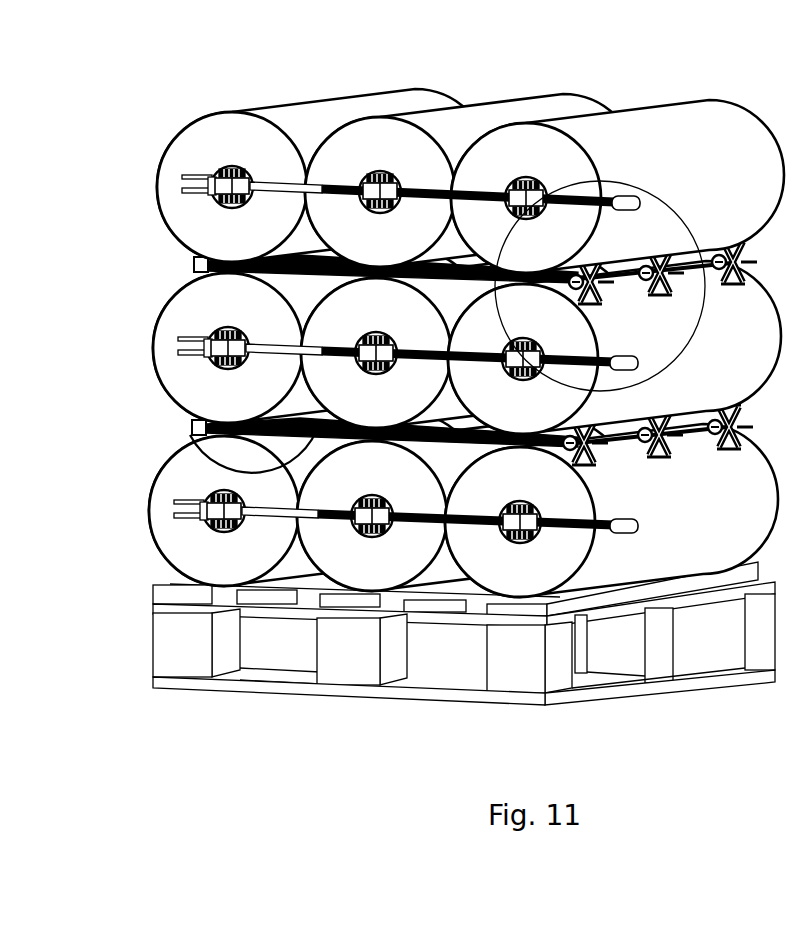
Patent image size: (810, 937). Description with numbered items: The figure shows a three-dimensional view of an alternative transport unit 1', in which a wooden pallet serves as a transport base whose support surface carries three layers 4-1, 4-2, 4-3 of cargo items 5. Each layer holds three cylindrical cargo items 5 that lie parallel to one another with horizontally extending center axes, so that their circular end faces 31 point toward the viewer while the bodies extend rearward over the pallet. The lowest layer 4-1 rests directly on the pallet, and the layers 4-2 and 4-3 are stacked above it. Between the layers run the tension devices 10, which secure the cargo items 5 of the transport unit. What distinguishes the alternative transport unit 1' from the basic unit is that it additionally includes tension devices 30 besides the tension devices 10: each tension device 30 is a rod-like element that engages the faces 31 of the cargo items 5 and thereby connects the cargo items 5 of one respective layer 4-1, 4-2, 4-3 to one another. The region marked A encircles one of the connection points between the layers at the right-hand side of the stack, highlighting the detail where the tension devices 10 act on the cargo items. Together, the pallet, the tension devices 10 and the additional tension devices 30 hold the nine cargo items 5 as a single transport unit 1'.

The alternative transport unit 1' is at (414, 307).
The cargo item 5 is at (284, 175).
The face 31 is at (193, 221).
The layer 4-1 is at (134, 475).
The layer 4-2 is at (136, 330).
The layer 4-3 is at (421, 181).
The tension device 10 is at (200, 438).
The tension device 30 is at (273, 513).
The detail region A is at (613, 286).